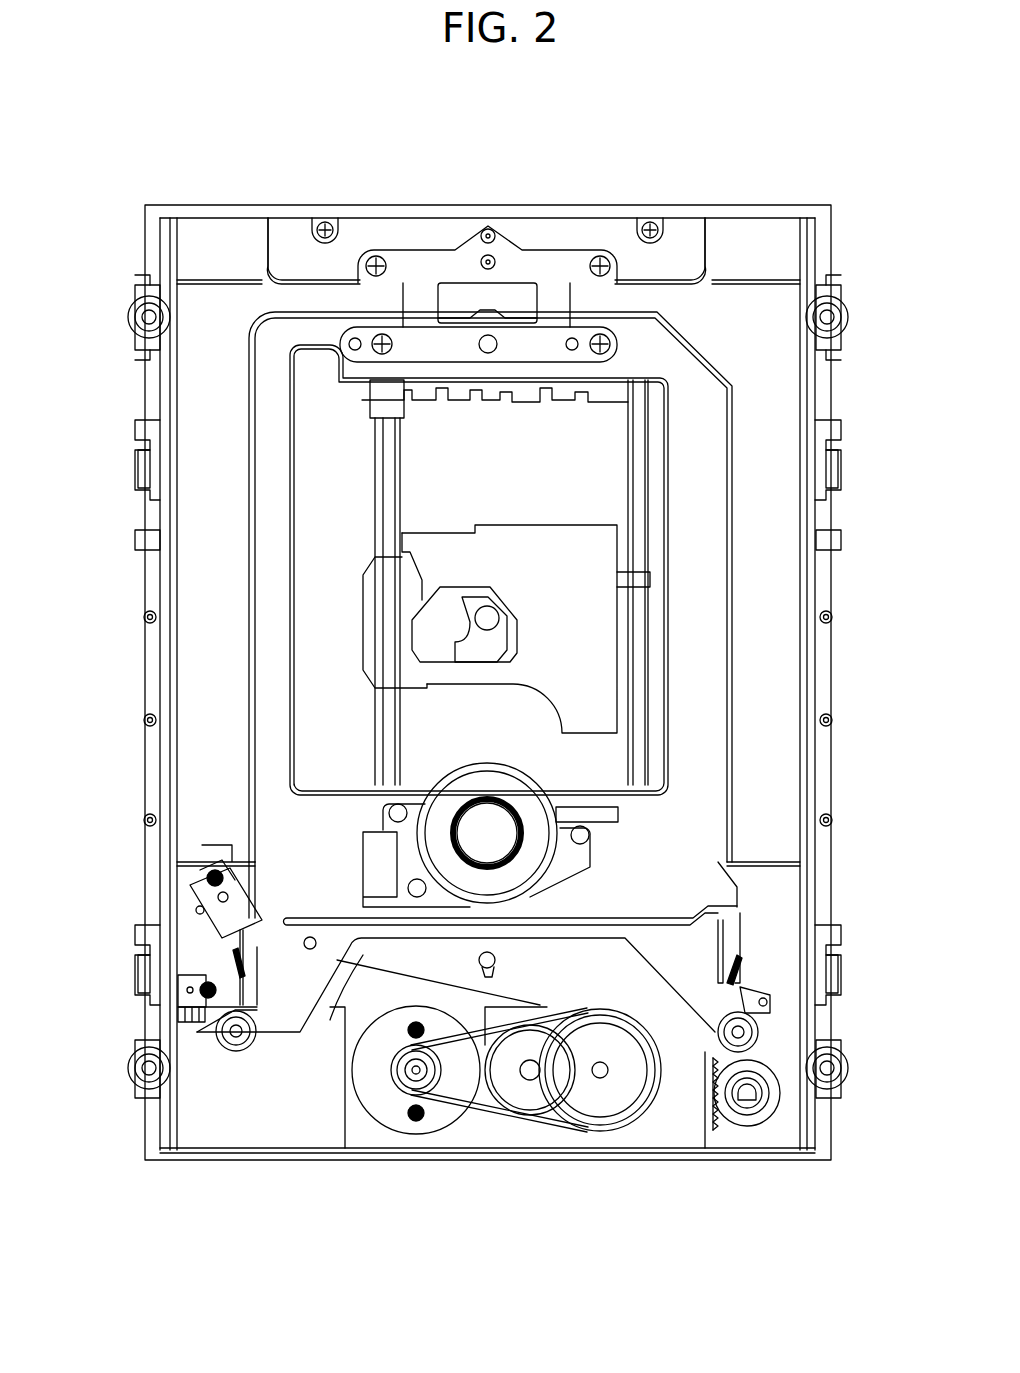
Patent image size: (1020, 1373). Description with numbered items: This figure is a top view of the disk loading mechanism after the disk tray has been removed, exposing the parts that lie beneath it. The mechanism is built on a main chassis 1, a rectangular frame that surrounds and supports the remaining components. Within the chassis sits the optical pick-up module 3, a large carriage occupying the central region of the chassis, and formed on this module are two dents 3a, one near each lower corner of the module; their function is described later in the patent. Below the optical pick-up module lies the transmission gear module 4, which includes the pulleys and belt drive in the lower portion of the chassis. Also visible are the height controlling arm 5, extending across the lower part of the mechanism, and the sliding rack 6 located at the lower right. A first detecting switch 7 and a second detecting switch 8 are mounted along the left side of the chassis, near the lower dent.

The main chassis 1 is at (848, 594).
The optical pick-up module 3 is at (255, 535).
The dents 3a is at (735, 932).
The transmission gear module 4 is at (493, 1140).
The height controlling arm 5 is at (365, 962).
The sliding rack 6 is at (706, 1118).
The first detecting switch 7 is at (200, 890).
The second detecting switch 8 is at (185, 998).